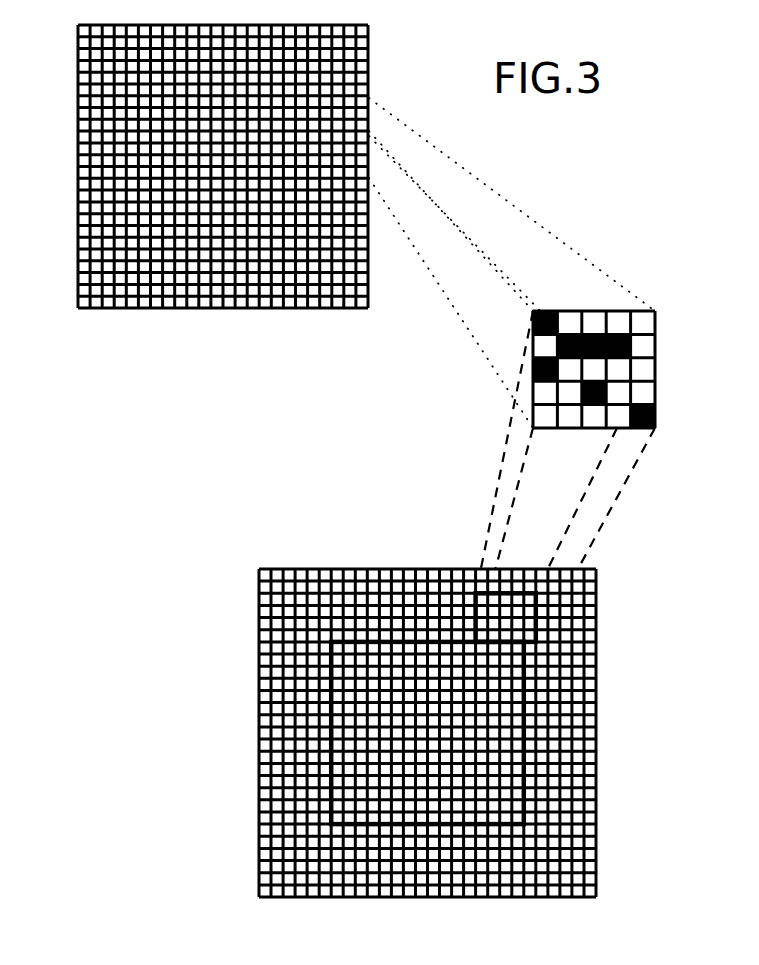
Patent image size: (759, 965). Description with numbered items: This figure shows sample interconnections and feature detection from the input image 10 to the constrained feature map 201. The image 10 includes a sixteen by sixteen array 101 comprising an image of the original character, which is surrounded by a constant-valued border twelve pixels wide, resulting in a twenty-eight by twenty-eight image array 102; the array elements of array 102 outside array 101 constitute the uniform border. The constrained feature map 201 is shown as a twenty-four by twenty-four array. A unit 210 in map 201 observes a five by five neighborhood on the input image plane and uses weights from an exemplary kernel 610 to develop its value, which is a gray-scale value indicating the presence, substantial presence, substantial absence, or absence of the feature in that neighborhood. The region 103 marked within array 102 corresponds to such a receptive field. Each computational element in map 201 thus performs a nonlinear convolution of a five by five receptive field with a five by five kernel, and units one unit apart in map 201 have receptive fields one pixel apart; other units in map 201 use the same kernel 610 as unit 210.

The image 10 is at (566, 148).
The constrained feature map 201 is at (260, 309).
The unit 210 is at (296, 56).
The kernel 610 is at (652, 420).
The image array 102 is at (258, 652).
The array 101 is at (331, 805).
The matching block 103 is at (533, 607).